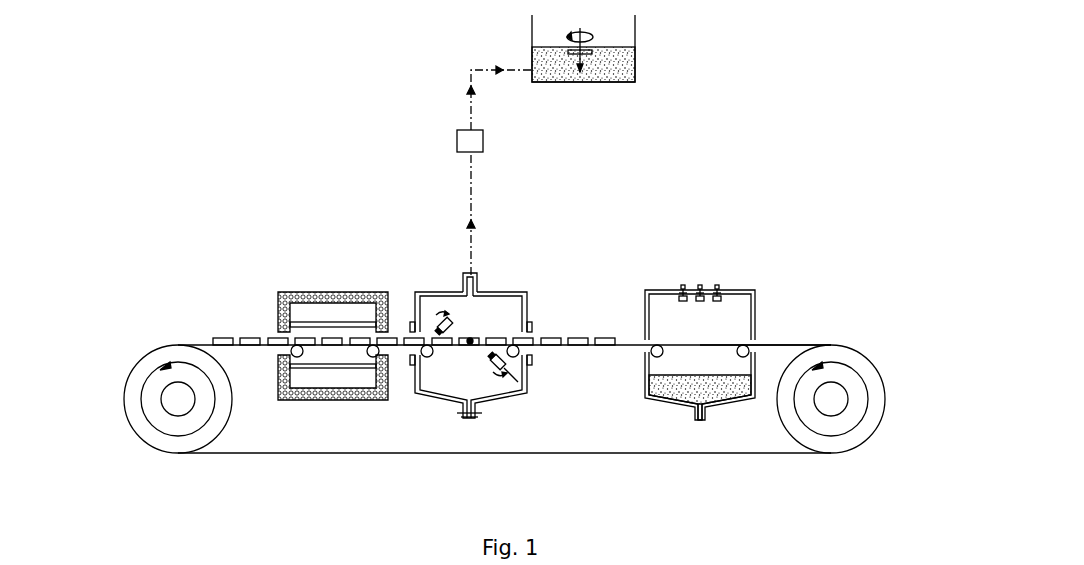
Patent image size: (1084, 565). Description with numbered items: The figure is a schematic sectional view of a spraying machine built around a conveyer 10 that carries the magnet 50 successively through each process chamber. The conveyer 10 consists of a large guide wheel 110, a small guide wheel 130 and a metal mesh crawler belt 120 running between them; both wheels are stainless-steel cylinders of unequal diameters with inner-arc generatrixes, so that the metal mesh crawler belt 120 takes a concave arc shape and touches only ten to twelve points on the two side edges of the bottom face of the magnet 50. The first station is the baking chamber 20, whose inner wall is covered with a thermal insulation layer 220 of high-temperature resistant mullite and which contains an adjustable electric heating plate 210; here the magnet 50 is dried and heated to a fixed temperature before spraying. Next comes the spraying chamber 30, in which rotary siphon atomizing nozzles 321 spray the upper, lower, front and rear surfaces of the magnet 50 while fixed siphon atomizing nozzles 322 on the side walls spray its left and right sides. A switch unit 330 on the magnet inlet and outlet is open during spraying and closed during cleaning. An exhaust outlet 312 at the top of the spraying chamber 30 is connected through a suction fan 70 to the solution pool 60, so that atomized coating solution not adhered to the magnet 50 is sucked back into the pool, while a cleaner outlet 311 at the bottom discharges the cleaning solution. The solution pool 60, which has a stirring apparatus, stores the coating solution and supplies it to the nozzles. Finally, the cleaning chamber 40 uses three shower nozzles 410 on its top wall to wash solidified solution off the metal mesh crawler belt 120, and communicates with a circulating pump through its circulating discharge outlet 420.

The conveyer 10 is at (551, 348).
The large guide wheel 110 is at (158, 345).
The metal mesh crawler belt 120 is at (784, 294).
The small guide wheel 130 is at (459, 297).
The baking chamber 20 is at (340, 299).
The heating plate 210 is at (296, 285).
The thermal insulation layer 220 is at (370, 299).
The spraying chamber 30 is at (457, 347).
The cleaner outlet 311 is at (490, 454).
The exhaust outlet 312 is at (506, 247).
The rotary siphon atomizing nozzle 321 is at (400, 403).
The fixed siphon atomizing nozzle 322 is at (415, 417).
The switch unit 330 is at (521, 265).
The cleaning chamber 40 is at (722, 345).
The shower nozzles 410 is at (739, 249).
The circulating discharge outlet 420 is at (732, 448).
The magnet 50 is at (429, 291).
The solution pool 60 is at (610, 48).
The suction fan 70 is at (502, 170).